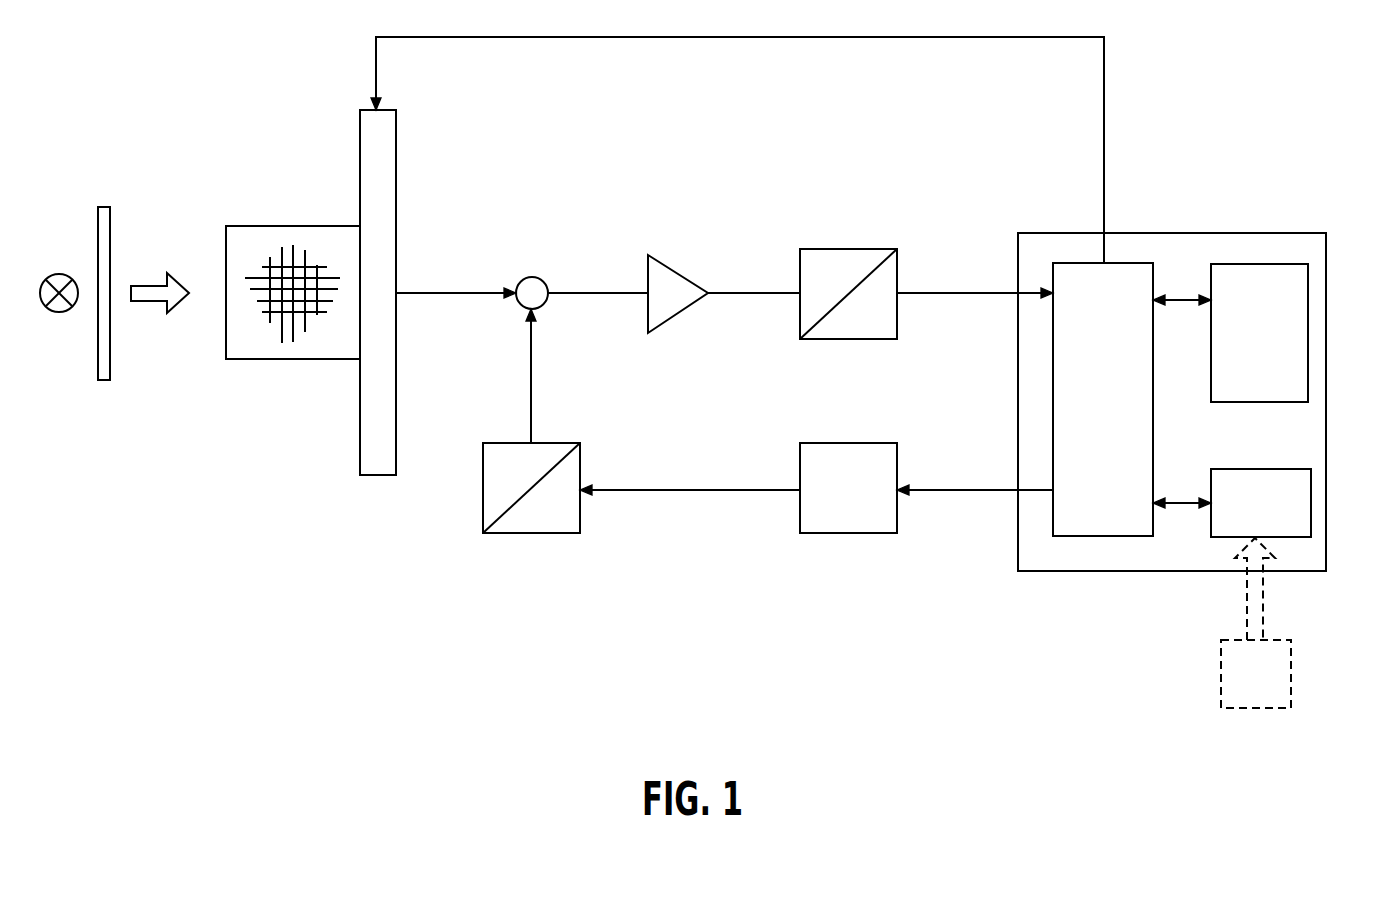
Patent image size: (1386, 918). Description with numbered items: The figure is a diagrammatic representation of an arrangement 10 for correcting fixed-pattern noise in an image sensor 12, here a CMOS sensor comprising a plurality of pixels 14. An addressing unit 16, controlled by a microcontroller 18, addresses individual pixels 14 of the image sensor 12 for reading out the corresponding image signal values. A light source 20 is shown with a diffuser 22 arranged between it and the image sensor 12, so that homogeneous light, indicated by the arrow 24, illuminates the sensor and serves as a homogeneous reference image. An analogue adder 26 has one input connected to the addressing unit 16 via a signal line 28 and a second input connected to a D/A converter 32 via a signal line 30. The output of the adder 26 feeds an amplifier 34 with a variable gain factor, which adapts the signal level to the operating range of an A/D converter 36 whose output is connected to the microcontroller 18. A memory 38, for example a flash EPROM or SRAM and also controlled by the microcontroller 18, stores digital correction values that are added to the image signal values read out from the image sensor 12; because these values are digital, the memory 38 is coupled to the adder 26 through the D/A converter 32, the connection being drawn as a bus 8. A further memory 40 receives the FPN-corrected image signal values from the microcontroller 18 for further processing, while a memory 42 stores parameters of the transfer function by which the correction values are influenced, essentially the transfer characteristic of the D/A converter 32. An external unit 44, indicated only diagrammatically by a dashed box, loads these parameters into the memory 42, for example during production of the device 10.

The data bus 8 is at (684, 464).
The arrangement 10 is at (372, 594).
The image sensor 12 is at (235, 226).
The pixels 14 is at (288, 280).
The addressing unit 16 is at (375, 476).
The microcontroller 18 is at (1078, 538).
The light source 20 is at (59, 313).
The diffuser 22 is at (102, 381).
The arrow 24 is at (145, 302).
The analogue adder 26 is at (532, 277).
The signal line 28 is at (438, 293).
The signal line 30 is at (532, 372).
The D/A converter 32 is at (515, 534).
The amplifier 34 is at (668, 262).
The A/D converter 36 is at (828, 249).
The memory 38 is at (843, 534).
The memory 40 is at (1273, 277).
The memory 42 is at (1312, 484).
The external unit 44 is at (1253, 710).